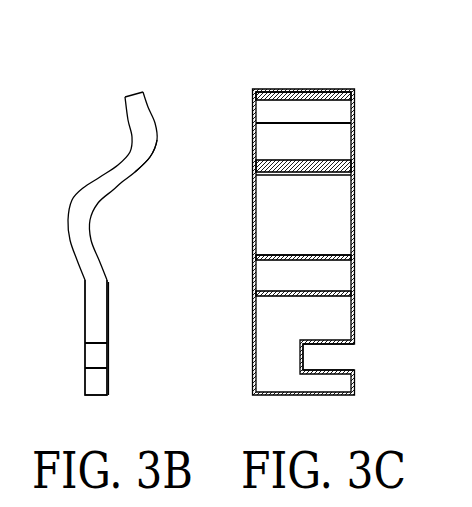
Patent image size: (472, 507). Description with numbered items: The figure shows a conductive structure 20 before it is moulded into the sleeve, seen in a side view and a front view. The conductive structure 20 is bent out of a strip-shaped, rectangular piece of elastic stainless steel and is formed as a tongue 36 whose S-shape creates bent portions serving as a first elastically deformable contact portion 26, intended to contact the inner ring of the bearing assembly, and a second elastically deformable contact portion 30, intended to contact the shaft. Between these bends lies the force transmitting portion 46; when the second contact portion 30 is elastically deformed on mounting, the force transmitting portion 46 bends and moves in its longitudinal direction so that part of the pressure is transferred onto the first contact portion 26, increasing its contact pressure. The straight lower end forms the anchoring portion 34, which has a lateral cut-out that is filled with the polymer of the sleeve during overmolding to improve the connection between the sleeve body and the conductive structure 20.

In FIG. 3B, the conductive structure 20 is at (100, 185).
In FIG. 3C, the conductive structure 20 is at (324, 240).
In FIG. 3B, the first elastically deformable contact portion 26 is at (70, 235).
In FIG. 3C, the first elastically deformable contact portion 26 is at (321, 208).
In FIG. 3B, the second elastically deformable contact portion 30 is at (157, 135).
In FIG. 3B, the force transmitting portion 46 is at (133, 166).
In FIG. 3B, the anchoring portion 34 is at (85, 360).
In FIG. 3C, the anchoring portion 34 is at (315, 355).
In FIG. 3C, the tongue 36 is at (305, 133).